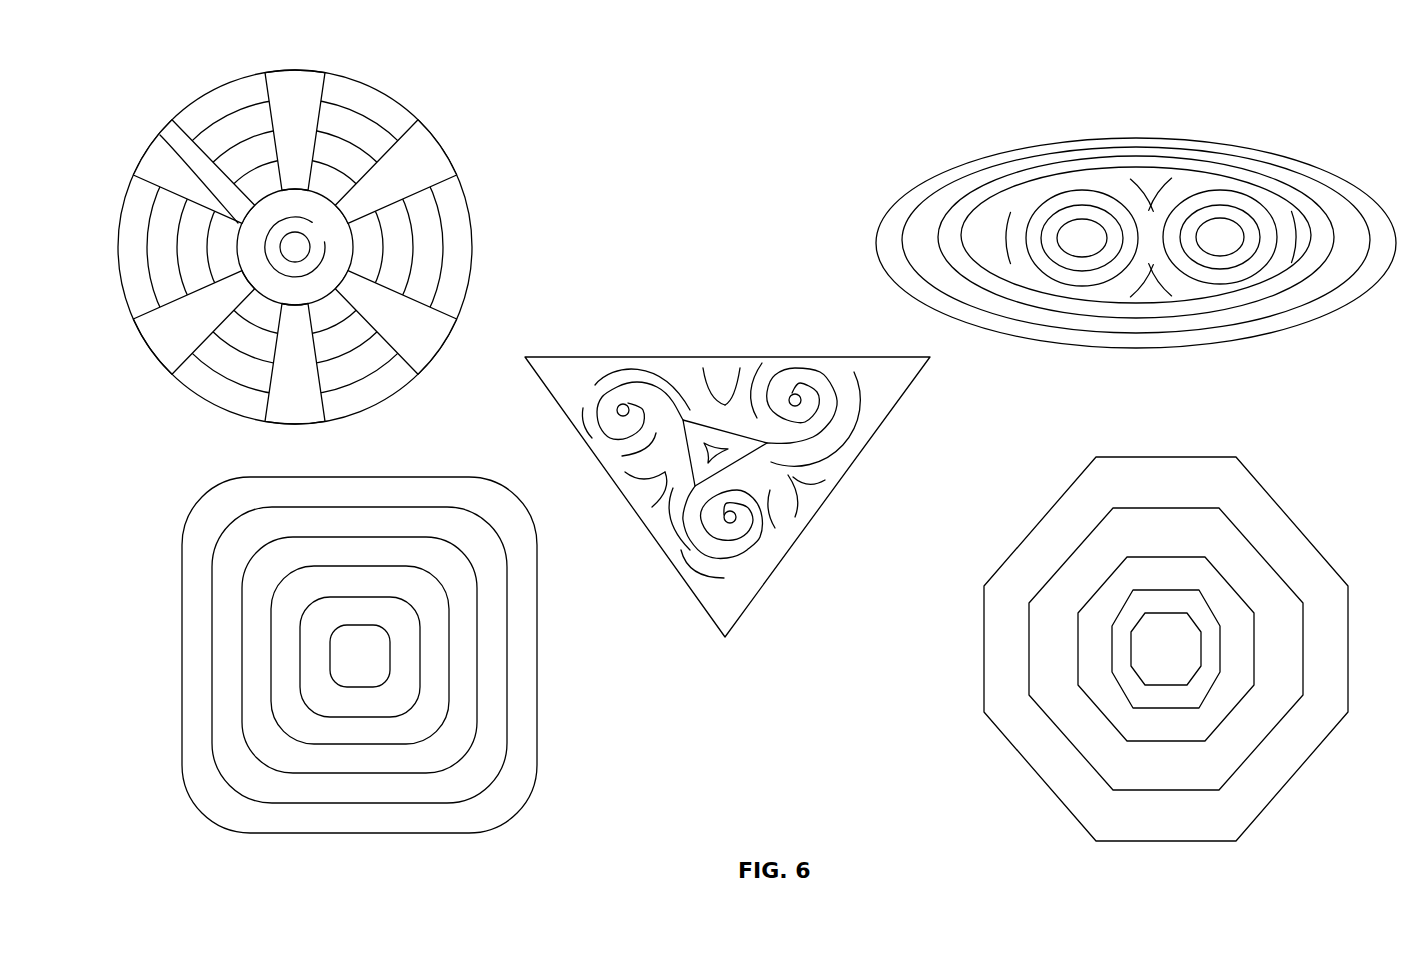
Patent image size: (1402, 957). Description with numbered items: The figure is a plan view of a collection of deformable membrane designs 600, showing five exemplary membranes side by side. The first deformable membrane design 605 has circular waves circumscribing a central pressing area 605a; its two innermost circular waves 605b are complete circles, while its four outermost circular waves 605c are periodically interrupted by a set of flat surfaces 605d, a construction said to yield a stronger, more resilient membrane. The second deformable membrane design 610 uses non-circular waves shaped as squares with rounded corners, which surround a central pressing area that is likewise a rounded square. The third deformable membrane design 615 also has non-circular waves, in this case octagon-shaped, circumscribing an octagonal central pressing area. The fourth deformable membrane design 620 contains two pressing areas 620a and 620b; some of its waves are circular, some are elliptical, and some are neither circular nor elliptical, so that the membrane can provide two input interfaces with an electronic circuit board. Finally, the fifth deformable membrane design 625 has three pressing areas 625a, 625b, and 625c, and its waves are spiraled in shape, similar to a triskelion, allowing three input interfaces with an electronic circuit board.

The collection of deformable membrane designs 600 is at (1136, 232).
The first deformable membrane design 605 is at (377, 88).
The central pressing area 605a is at (295, 247).
The innermost circular waves 605b is at (160, 135).
The outermost circular waves 605c is at (400, 143).
The flat surfaces 605d is at (405, 335).
The second deformable membrane design 610 is at (205, 810).
The third deformable membrane design 615 is at (1293, 518).
The fourth deformable membrane design 620 is at (960, 170).
The pressing area 620a is at (1087, 240).
The pressing area 620b is at (1227, 237).
The fifth deformable membrane design 625 is at (850, 467).
The pressing area 625a is at (620, 404).
The pressing area 625b is at (790, 394).
The pressing area 625c is at (735, 523).